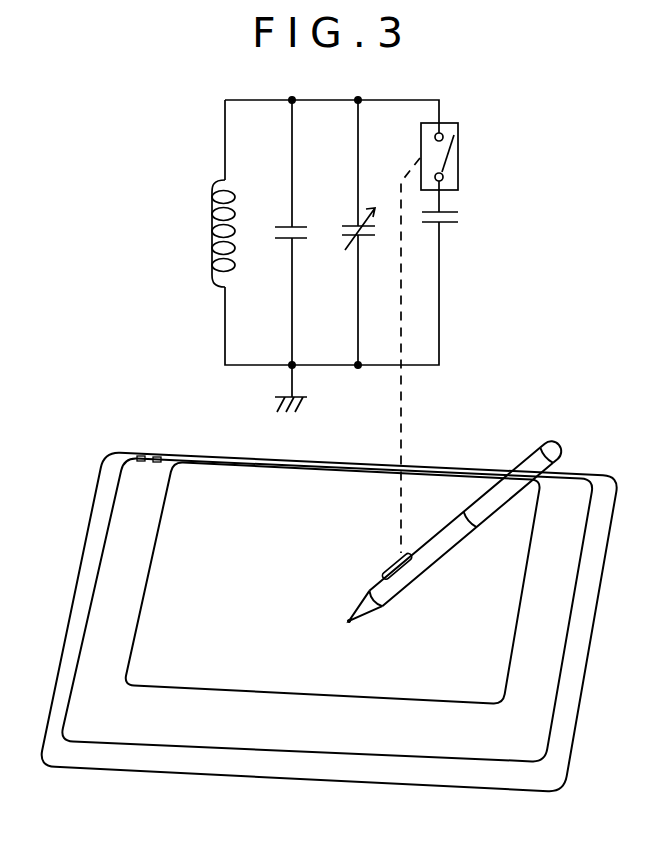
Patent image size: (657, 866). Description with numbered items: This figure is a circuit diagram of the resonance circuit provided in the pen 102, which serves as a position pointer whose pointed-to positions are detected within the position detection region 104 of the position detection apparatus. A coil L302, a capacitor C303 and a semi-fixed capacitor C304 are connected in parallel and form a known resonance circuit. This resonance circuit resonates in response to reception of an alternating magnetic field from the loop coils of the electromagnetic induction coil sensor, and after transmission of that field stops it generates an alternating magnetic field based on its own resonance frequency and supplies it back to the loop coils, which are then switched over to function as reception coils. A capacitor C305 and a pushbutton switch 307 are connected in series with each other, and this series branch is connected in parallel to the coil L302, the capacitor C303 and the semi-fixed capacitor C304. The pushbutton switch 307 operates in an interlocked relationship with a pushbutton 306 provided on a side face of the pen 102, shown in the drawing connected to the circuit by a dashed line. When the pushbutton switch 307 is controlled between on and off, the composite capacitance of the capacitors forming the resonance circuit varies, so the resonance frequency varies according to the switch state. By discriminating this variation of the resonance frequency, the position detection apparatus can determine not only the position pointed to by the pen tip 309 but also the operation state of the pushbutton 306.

The coil L302 is at (197, 233).
The capacitor C303 is at (272, 220).
The semi-fixed capacitor C304 is at (340, 226).
The capacitor C305 is at (467, 215).
The pushbutton switch 307 is at (458, 156).
The pushbutton 306 is at (390, 566).
The pen tip 309 is at (349, 621).
The pen 102 is at (428, 562).
The position detection region 104 is at (177, 567).